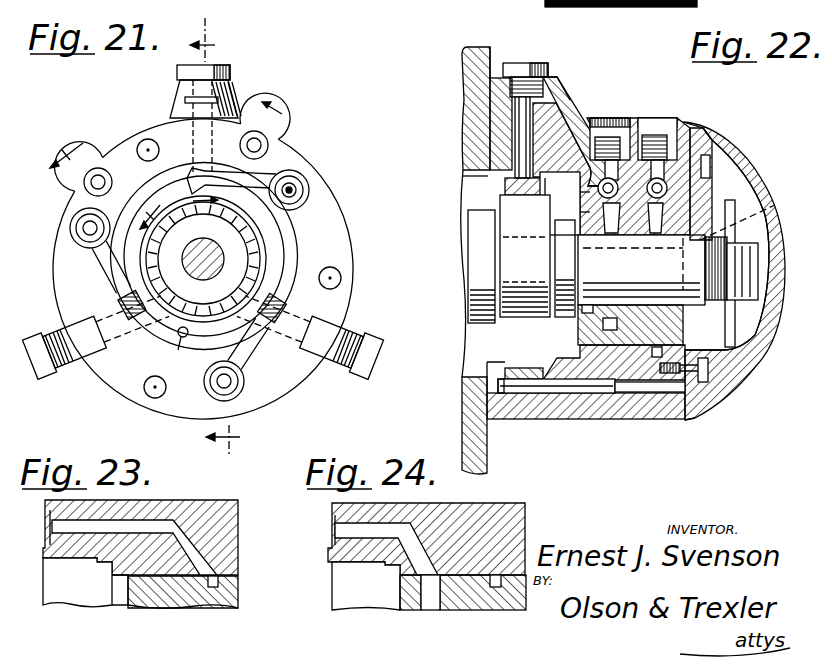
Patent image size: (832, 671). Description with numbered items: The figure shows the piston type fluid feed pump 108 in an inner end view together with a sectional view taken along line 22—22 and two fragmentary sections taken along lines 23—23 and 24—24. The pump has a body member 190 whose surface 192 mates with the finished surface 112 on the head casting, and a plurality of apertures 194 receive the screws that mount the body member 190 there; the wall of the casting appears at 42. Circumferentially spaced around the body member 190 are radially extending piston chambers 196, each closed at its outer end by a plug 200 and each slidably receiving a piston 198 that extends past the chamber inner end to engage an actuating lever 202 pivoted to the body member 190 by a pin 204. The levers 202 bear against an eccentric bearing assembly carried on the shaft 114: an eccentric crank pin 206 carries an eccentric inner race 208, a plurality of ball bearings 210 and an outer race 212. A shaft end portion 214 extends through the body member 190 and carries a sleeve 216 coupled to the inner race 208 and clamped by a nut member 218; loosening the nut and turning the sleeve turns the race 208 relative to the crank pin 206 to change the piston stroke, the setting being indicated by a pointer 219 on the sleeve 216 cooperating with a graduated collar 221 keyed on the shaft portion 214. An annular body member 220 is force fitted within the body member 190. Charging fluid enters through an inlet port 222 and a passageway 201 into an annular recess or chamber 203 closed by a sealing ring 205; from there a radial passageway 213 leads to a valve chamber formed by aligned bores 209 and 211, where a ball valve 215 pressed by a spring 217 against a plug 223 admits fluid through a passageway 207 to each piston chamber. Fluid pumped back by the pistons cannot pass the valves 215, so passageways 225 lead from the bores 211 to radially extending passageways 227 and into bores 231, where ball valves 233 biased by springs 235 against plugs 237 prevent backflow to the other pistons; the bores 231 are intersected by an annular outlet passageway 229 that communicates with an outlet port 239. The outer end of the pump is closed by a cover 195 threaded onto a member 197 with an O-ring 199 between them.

In FIG. 21, the section line 22— 22 is at (229, 236).
In FIG. 21, the section line 23— 23 is at (237, 145).
In FIG. 21, the section line 24— 24 is at (111, 175).
In FIG. 22, the housing wall 42 is at (472, 110).
In FIG. 21, the feed pump 108 is at (321, 150).
In FIG. 22, the feed pump 108 is at (578, 92).
In FIG. 22, the finished surface 112 is at (497, 88).
In FIG. 22, the shaft 114 is at (483, 228).
In FIG. 22, the body member 190 is at (561, 408).
In FIG. 23, the body member 190 is at (218, 507).
In FIG. 24, the body member 190 is at (495, 520).
In FIG. 22, the surface 192 is at (495, 122).
In FIG. 21, the apertures 194 is at (343, 282).
In FIG. 22, the cover 195 is at (740, 364).
In FIG. 22, the piston chambers 196 is at (520, 180).
In FIG. 22, the member 197 is at (687, 417).
In FIG. 21, the piston 198 is at (185, 128).
In FIG. 22, the piston 198 is at (519, 143).
In FIG. 22, the O-ring 199 is at (748, 273).
In FIG. 22, the plug 200 is at (514, 63).
In FIG. 24, the passageway 201 is at (430, 595).
In FIG. 21, the actuating lever 202 is at (258, 180).
In FIG. 22, the actuating lever 202 is at (575, 195).
In FIG. 22, the annular recess or chamber 203 is at (525, 256).
In FIG. 21, the pin 204 is at (296, 190).
In FIG. 22, the pin 204 is at (528, 384).
In FIG. 22, the sealing ring 205 is at (580, 333).
In FIG. 21, the eccentric crank pin 206 is at (222, 254).
In FIG. 22, the eccentric crank pin 206 is at (526, 292).
In FIG. 22, the passageway 207 is at (553, 110).
In FIG. 21, the eccentric inner race 208 is at (235, 276).
In FIG. 22, the bore 209 is at (616, 184).
In FIG. 21, the ball bearings 210 is at (208, 312).
In FIG. 22, the bore 211 is at (562, 208).
In FIG. 21, the outer race 212 is at (210, 312).
In FIG. 22, the outer race 212 is at (575, 213).
In FIG. 22, the radial passageway 213 is at (641, 270).
In FIG. 22, the shaft end portion 214 is at (740, 194).
In FIG. 22, the ball valve 215 is at (589, 268).
In FIG. 22, the sleeve 216 is at (718, 382).
In FIG. 22, the spring 217 is at (568, 140).
In FIG. 22, the nut member 218 is at (733, 381).
In FIG. 22, the pointer 219 is at (760, 233).
In FIG. 22, the annular body member 220 is at (630, 325).
In FIG. 23, the annular body member 220 is at (188, 594).
In FIG. 24, the annular body member 220 is at (510, 605).
In FIG. 22, the graduated collar 221 is at (762, 203).
In FIG. 24, the inlet port 222 is at (395, 530).
In FIG. 22, the plug 223 is at (603, 140).
In FIG. 22, the passageways 225 is at (684, 216).
In FIG. 22, the radially extending passageway 227 is at (705, 187).
In FIG. 22, the annular outlet passageway 229 is at (656, 358).
In FIG. 23, the annular outlet passageway 229 is at (218, 583).
In FIG. 24, the annular outlet passageway 229 is at (493, 585).
In FIG. 22, the valve chambers or bores 231 is at (665, 184).
In FIG. 22, the ball valve 233 is at (709, 177).
In FIG. 22, the spring 235 is at (684, 147).
In FIG. 22, the plug 237 is at (654, 140).
In FIG. 23, the outlet port 239 is at (143, 525).